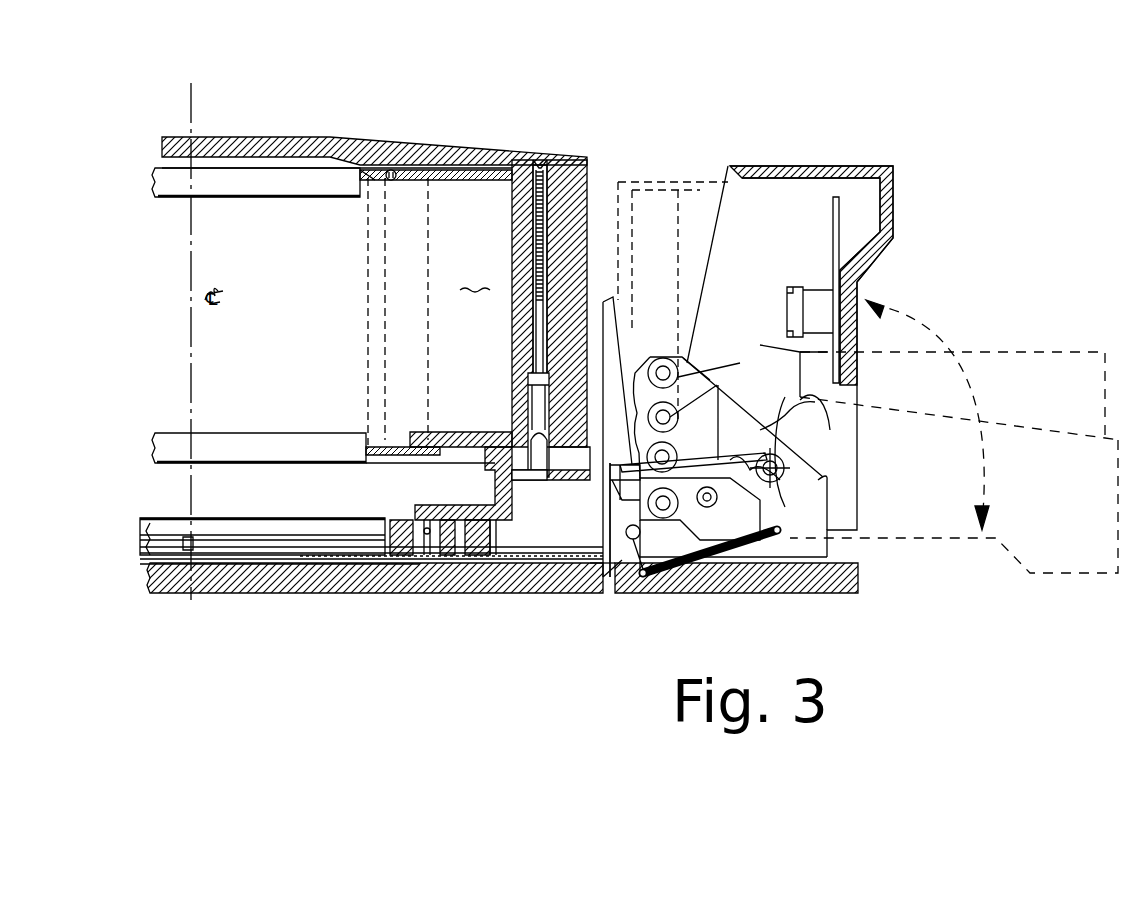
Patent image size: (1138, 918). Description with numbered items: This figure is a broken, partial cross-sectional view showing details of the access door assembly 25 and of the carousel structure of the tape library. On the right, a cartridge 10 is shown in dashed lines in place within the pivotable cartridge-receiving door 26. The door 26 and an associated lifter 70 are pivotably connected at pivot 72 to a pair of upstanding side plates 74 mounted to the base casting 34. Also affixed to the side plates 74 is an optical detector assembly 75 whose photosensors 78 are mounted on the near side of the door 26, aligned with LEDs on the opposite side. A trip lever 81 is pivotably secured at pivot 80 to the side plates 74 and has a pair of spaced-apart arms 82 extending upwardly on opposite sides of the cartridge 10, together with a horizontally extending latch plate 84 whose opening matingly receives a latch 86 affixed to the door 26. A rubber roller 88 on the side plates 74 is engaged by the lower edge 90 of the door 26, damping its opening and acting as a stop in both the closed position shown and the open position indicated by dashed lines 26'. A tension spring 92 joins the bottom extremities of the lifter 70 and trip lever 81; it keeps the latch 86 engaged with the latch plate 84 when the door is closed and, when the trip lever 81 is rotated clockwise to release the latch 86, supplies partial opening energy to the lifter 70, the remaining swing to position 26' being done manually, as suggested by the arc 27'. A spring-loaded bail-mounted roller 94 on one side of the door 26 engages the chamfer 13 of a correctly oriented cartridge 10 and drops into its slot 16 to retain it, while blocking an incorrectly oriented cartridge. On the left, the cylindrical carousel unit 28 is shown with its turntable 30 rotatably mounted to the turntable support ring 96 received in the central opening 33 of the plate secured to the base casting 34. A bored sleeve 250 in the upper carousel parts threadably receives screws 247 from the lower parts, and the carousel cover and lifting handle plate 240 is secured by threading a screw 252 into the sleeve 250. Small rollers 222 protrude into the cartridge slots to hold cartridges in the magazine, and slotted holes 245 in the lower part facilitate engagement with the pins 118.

The cylindrical carousel unit 28 is at (362, 140).
The carousel cover and lifting handle plate 240 is at (480, 160).
The screw 252 is at (544, 160).
The cartridge 10 is at (690, 128).
The chamfer 13 is at (812, 202).
The pivotable cartridge-receiving door 26 is at (841, 361).
The slot 16 is at (788, 285).
The bail-mounted roller 94 is at (787, 318).
The small rollers 222 is at (391, 186).
The bored insert or sleeve 250 is at (512, 224).
The screws 247 is at (534, 348).
The slotted holes 245 is at (532, 400).
The pins 118 is at (532, 435).
The spaced-apart arms 82 is at (613, 334).
The optical detector assembly 75 is at (680, 357).
The photosensors 78 is at (740, 365).
The pivot 72 is at (810, 443).
The lifter 70 is at (800, 467).
The upstanding side plates 74 is at (828, 490).
The latch 86 is at (608, 478).
The latch plate 84 is at (606, 500).
The turntable 30 is at (495, 481).
The turntable support ring 96 is at (416, 554).
The central opening 33 is at (374, 575).
The base casting 34 is at (470, 594).
The trip lever 81 is at (605, 554).
The pivot 80 is at (637, 552).
The rubber roller 88 is at (700, 572).
The lower edge 90 is at (730, 585).
The tension spring 92 is at (822, 590).
The access door assembly 25 is at (873, 558).
The pivot arc 27' is at (968, 411).
The door open position 26' is at (957, 462).